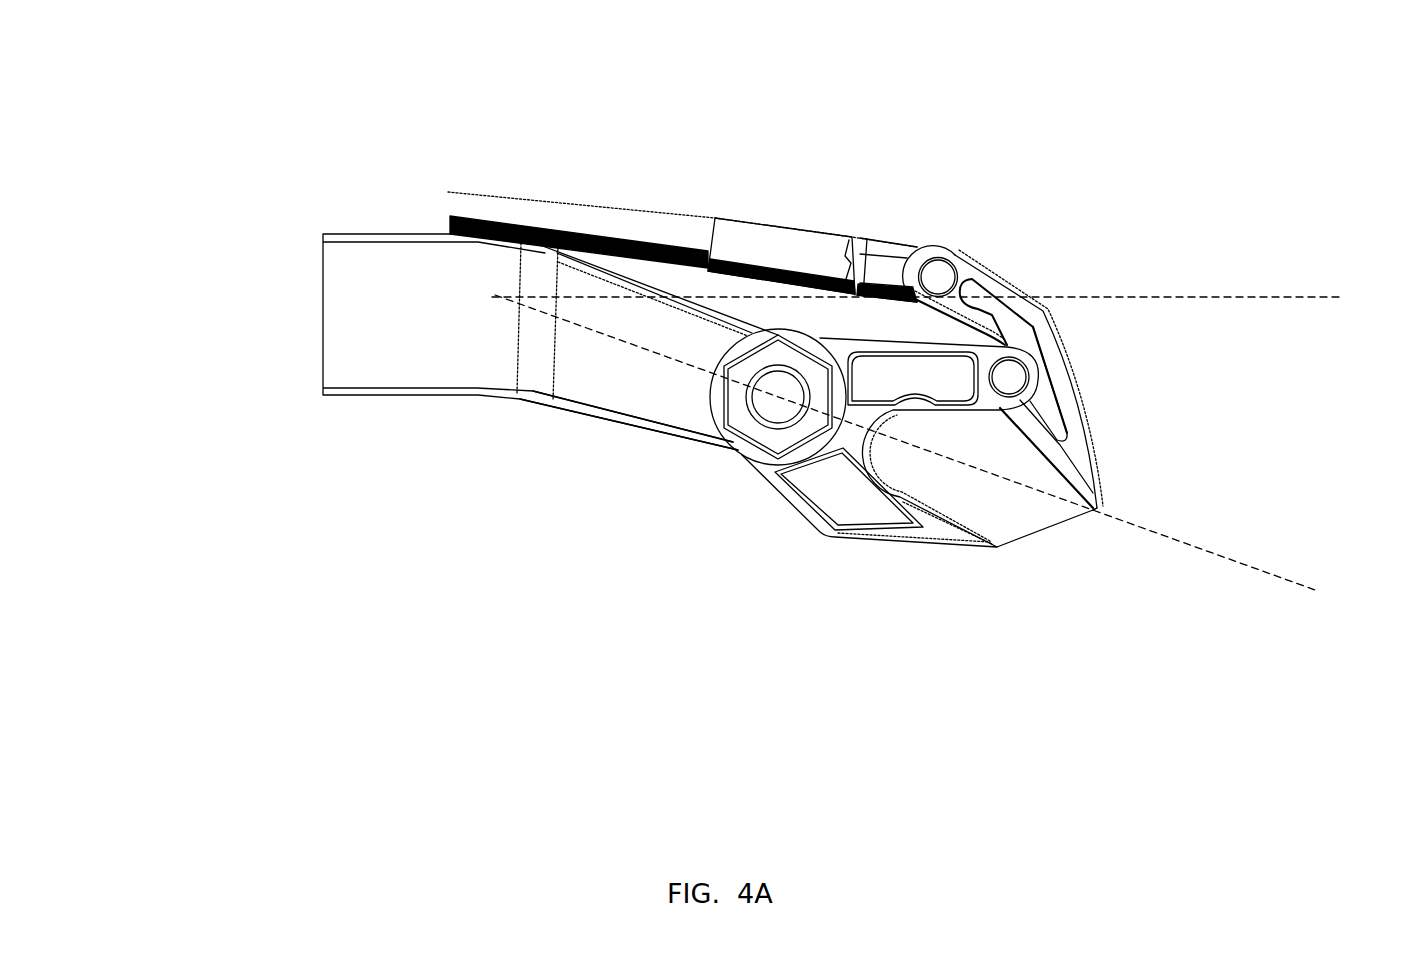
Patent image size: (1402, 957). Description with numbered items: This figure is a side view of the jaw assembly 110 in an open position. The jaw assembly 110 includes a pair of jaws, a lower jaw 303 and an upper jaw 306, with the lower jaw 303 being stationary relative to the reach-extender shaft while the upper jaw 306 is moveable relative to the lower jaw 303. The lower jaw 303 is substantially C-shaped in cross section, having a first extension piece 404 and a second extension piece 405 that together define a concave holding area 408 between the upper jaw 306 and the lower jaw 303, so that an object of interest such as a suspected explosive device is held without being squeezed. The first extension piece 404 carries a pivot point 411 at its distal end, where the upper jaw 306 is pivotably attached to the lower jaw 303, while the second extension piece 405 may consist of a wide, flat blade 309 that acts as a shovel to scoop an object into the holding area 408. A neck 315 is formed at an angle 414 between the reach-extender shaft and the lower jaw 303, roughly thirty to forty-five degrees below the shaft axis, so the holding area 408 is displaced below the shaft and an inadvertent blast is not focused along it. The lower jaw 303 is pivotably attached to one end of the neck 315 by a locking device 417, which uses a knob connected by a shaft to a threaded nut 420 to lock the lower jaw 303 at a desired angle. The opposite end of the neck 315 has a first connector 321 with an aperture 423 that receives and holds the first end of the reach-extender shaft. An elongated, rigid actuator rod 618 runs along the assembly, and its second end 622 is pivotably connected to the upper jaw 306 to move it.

The jaw assembly 110 is at (877, 105).
The second end of the actuator rod 622 is at (1018, 193).
The actuator rod 618 is at (605, 212).
The first connector 321 is at (347, 233).
The aperture 423 is at (243, 293).
The first extension piece 404 is at (1026, 378).
The angle 414 is at (1303, 302).
The upper jaw 306 is at (1073, 405).
The pivot point 411 is at (1093, 483).
The neck 315 is at (565, 408).
The locking device 417 is at (670, 443).
The threaded nut 420 is at (738, 412).
The holding area 408 is at (905, 462).
The blade 309 is at (962, 505).
The lower jaw 303 is at (907, 543).
The second extension piece 405 is at (955, 547).